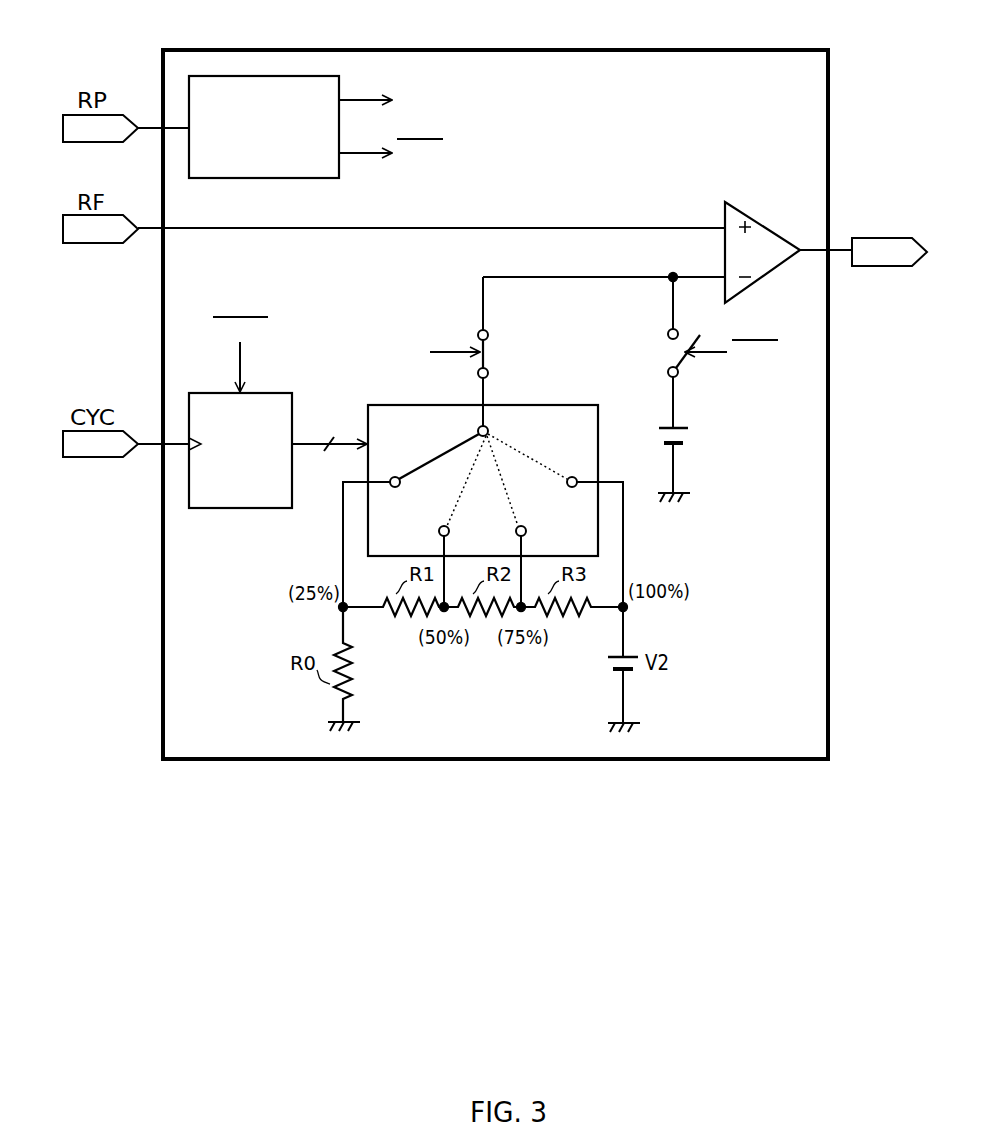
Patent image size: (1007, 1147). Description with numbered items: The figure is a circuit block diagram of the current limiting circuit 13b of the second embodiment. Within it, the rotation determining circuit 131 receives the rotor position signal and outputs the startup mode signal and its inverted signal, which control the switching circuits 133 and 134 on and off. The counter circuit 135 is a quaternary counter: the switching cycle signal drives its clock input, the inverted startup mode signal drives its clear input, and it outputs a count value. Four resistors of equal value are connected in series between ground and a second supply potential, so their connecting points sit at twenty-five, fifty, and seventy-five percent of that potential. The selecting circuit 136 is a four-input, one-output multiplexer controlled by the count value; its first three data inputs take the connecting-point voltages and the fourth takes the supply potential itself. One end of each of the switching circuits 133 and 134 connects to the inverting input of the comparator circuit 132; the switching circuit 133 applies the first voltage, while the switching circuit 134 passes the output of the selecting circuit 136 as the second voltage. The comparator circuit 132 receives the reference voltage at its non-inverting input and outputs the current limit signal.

The current limiting circuit 13b is at (497, 50).
The rotation determining circuit 131 is at (245, 179).
The comparator circuit 132 is at (763, 226).
The switching circuit 133 is at (668, 376).
The switching circuit 134 is at (489, 333).
The counter circuit 135 is at (266, 393).
The selecting circuit 136 is at (549, 405).